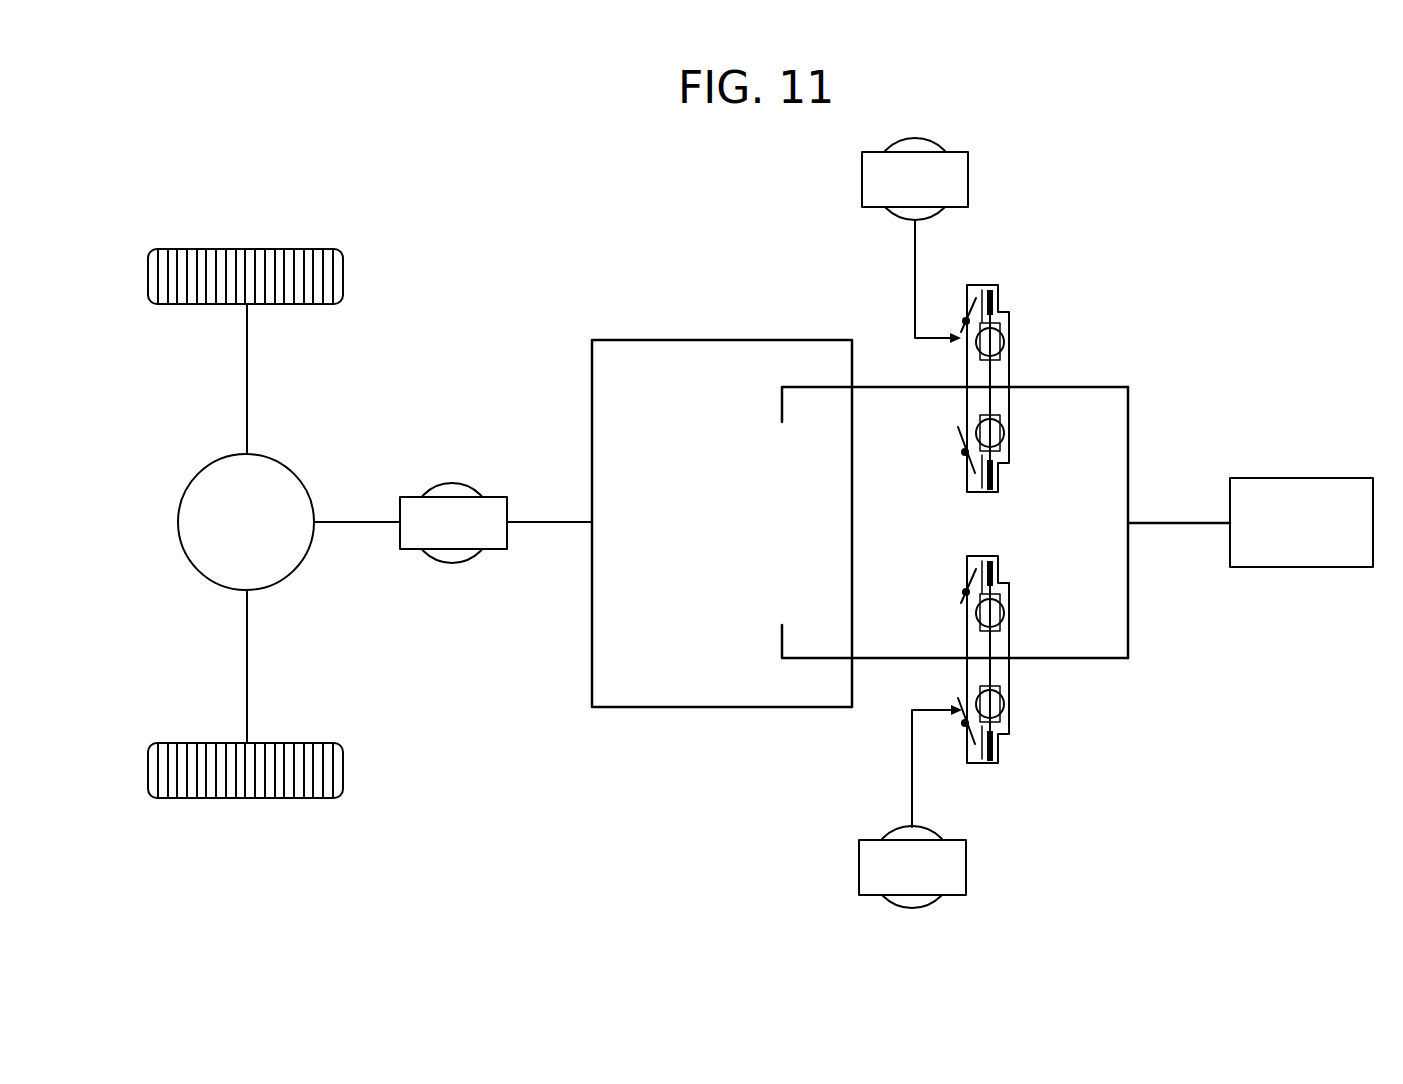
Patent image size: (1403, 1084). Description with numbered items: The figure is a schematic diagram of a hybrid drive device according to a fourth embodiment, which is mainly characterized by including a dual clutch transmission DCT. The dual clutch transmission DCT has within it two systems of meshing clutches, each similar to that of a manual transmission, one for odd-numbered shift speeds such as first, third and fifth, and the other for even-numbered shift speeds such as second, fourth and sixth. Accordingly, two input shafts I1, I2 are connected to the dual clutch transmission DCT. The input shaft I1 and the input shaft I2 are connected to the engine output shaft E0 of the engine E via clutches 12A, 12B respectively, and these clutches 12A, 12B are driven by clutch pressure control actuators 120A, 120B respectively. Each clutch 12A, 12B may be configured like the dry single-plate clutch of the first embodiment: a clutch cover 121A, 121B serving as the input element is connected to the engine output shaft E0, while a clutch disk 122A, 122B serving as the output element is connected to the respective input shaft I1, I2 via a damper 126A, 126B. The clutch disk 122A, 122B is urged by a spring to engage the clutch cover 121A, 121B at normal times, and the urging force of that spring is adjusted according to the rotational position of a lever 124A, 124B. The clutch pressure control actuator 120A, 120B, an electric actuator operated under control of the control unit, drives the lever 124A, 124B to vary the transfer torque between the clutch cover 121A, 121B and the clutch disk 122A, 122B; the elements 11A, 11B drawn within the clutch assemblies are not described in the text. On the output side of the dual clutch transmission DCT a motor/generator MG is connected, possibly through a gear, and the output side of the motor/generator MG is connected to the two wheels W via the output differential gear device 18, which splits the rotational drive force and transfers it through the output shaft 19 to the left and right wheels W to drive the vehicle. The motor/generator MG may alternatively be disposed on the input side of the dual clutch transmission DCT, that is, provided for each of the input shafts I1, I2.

The wheels W is at (343, 278).
The output shaft 19 is at (248, 412).
The output differential gear device 18 is at (196, 475).
The motor/generator MG is at (418, 497).
The dual clutch transmission DCT is at (629, 340).
The input shaft I1 is at (872, 385).
The input shaft I2 is at (872, 662).
The engine output shaft E0 is at (1180, 523).
The engine E is at (1293, 478).
The clutch pressure control actuator 120A is at (958, 151).
The clutch pressure control actuator 120B is at (955, 896).
The clutch 12A is at (989, 345).
The clutch 12B is at (988, 702).
The clutch cover 121A is at (1004, 310).
The clutch cover 121B is at (1004, 760).
The first clutch plate 11A is at (1006, 324).
The second clutch plate 11B is at (1006, 742).
The damper 126A is at (1004, 339).
The damper 126B is at (1004, 715).
The clutch disk 122A is at (985, 403).
The clutch disk 122B is at (985, 641).
The lever 124A is at (961, 332).
The lever 124B is at (961, 706).